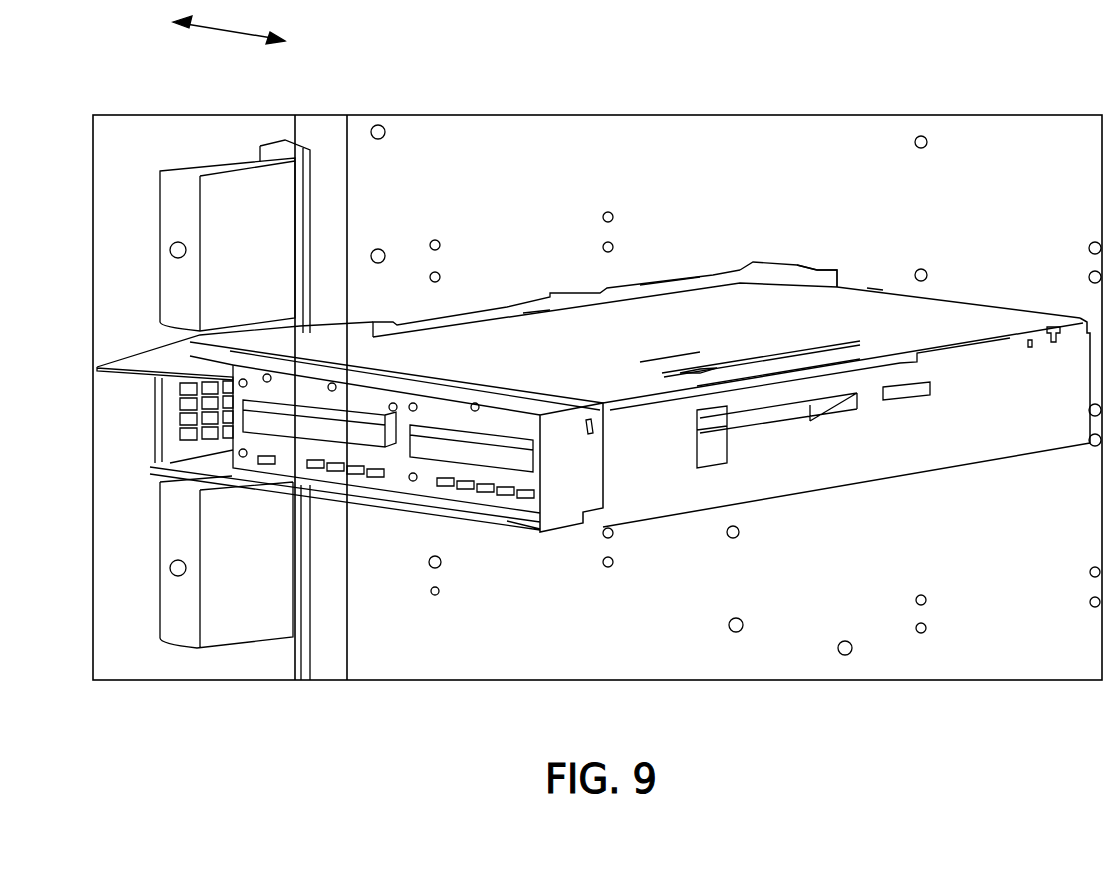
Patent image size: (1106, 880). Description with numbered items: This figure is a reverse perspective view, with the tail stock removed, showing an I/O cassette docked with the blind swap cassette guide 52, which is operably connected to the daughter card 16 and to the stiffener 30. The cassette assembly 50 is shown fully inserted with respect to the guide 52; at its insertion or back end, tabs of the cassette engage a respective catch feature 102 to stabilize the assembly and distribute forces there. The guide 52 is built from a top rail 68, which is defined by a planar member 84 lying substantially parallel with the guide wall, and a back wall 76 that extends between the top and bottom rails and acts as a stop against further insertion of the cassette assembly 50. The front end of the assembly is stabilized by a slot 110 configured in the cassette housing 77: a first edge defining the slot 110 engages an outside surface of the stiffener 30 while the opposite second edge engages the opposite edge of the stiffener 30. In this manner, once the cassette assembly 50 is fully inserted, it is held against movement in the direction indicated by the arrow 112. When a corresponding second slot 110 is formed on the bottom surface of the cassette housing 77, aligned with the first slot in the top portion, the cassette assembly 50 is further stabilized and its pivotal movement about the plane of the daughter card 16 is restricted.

The daughter card 16 is at (410, 137).
The stiffener 30 is at (310, 128).
The cassette assembly 50 is at (653, 483).
The blind swap cassette guide 52 is at (667, 280).
The top rail 68 is at (507, 310).
The back wall 76 is at (820, 267).
The cassette housing 77 is at (718, 340).
The planar member 84 is at (730, 275).
The catch feature 102 is at (837, 270).
The slot 110 is at (312, 342).
The arrow 112 is at (220, 30).